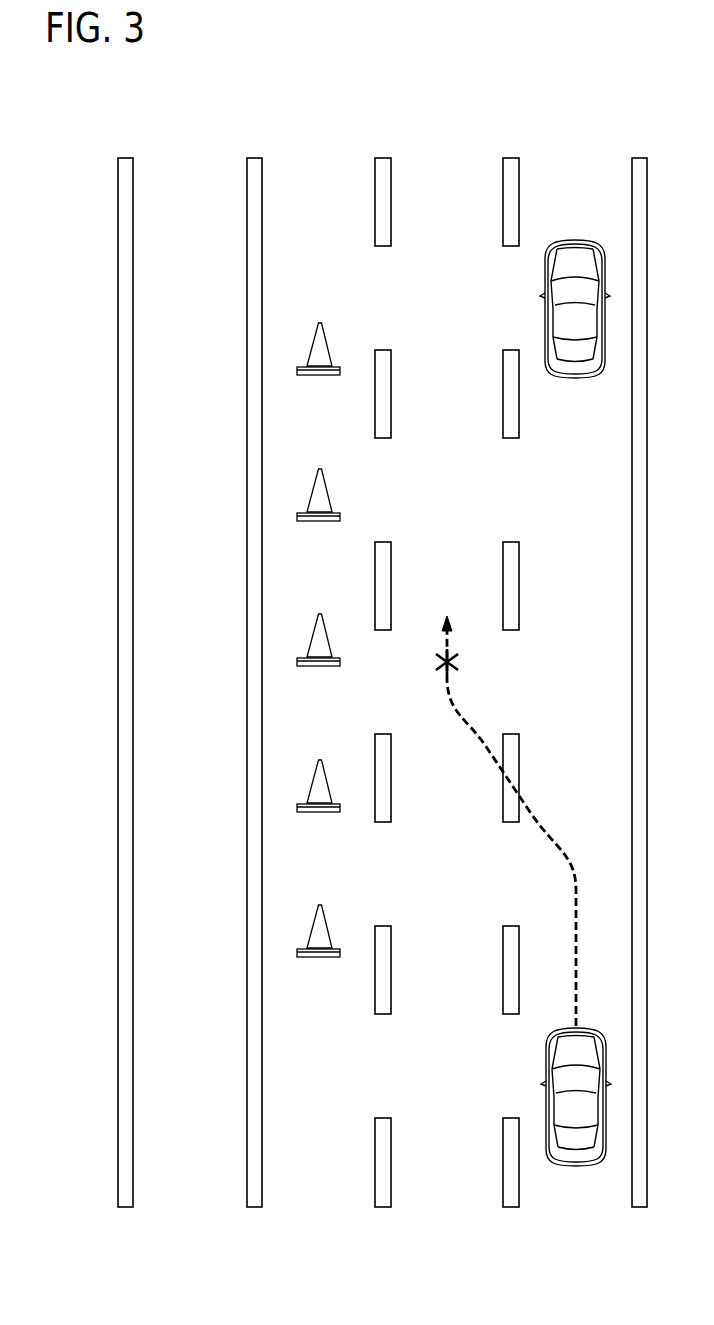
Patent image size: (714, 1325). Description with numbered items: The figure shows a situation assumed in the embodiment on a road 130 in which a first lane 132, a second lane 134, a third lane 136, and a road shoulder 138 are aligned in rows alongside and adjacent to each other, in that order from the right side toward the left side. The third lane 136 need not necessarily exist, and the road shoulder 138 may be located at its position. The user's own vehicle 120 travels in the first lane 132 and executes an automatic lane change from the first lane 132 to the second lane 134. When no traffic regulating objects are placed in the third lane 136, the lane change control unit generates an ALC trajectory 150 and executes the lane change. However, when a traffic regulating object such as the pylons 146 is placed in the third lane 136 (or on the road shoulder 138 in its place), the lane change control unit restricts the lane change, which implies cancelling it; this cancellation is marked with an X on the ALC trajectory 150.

The user's own vehicle 120 is at (575, 1170).
The road 130 is at (632, 92).
The first lane 132 is at (632, 148).
The second lane 134 is at (503, 148).
The third lane 136 is at (375, 148).
The road shoulder 138 is at (247, 148).
The pylons 146 is at (318, 320).
The ALC trajectory 150 is at (455, 703).